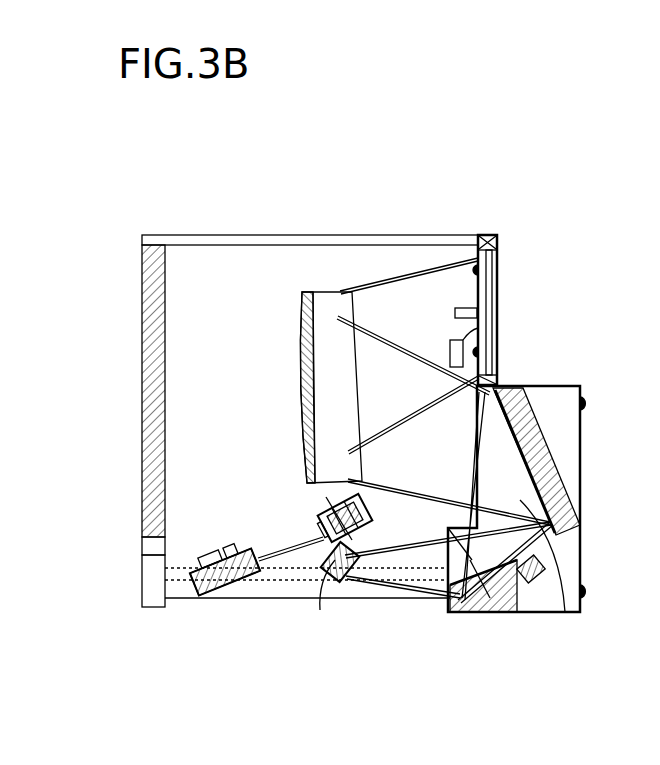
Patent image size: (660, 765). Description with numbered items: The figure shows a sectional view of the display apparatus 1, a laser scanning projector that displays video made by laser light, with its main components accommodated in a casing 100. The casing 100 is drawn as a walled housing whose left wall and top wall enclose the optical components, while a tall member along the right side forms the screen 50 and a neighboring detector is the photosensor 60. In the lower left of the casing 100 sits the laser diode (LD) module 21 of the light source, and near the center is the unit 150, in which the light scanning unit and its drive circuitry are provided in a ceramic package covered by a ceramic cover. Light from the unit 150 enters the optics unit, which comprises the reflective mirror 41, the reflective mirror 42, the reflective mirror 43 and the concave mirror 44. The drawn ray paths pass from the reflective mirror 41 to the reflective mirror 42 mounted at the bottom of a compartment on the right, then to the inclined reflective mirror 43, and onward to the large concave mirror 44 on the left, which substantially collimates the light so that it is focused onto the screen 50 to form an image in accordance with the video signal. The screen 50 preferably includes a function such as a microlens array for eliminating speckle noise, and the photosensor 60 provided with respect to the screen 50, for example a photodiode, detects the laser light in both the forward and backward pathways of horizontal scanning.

The display apparatus 1 is at (175, 207).
The casing 100 is at (397, 235).
The concave mirror 44 is at (326, 298).
The screen 50 is at (497, 293).
The photosensor 60 is at (483, 328).
The reflective mirror 43 is at (557, 450).
The reflective mirror 42 is at (566, 612).
The reflective mirror 41 is at (330, 582).
The laser diode (LD) module 21 is at (231, 597).
The unit 150 is at (306, 500).